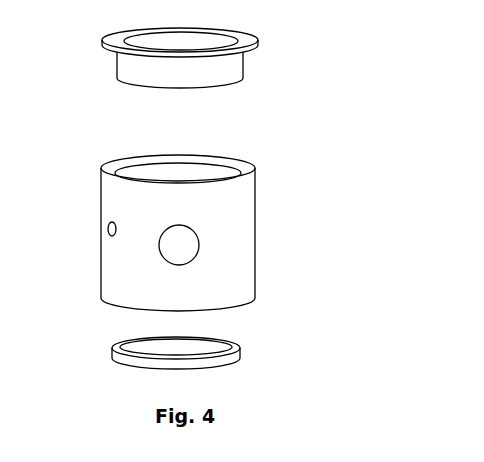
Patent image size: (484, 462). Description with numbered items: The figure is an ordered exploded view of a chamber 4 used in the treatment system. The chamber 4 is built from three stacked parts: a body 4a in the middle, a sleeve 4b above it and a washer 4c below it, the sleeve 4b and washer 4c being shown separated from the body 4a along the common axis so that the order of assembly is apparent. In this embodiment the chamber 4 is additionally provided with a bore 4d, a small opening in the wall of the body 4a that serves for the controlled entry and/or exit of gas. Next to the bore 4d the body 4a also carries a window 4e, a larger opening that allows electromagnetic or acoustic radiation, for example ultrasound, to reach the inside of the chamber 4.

The chamber 4 is at (372, 232).
The body 4a is at (257, 230).
The sleeve 4b is at (223, 73).
The washer 4c is at (242, 353).
The bore 4d is at (96, 224).
The window 4e is at (205, 248).